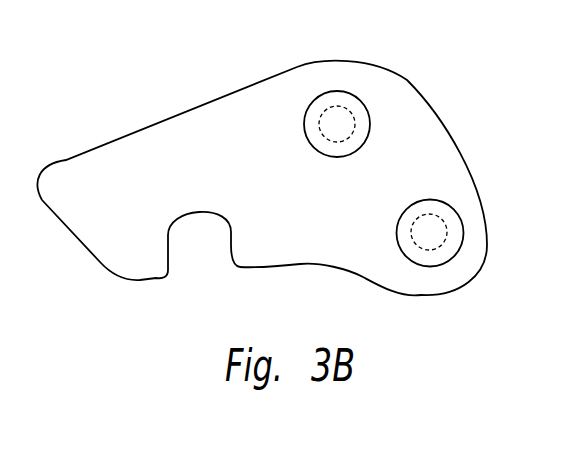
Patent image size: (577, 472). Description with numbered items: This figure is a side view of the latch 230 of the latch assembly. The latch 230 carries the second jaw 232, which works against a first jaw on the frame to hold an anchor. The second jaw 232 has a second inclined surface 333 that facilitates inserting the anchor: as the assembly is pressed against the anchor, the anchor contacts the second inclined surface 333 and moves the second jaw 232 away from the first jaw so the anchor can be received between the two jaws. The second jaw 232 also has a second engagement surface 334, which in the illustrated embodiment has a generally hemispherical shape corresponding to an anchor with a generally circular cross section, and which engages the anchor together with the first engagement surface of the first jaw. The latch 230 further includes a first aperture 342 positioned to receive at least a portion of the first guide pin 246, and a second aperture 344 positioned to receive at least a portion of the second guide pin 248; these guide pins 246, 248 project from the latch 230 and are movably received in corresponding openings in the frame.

The latch 230 is at (325, 223).
The second jaw 232 is at (80, 190).
The second inclined surface 333 is at (72, 235).
The second engagement surface 334 is at (168, 237).
The first aperture 342 is at (328, 118).
The second aperture 344 is at (438, 250).
The first guide pin 246 is at (370, 113).
The second guide pin 248 is at (411, 262).